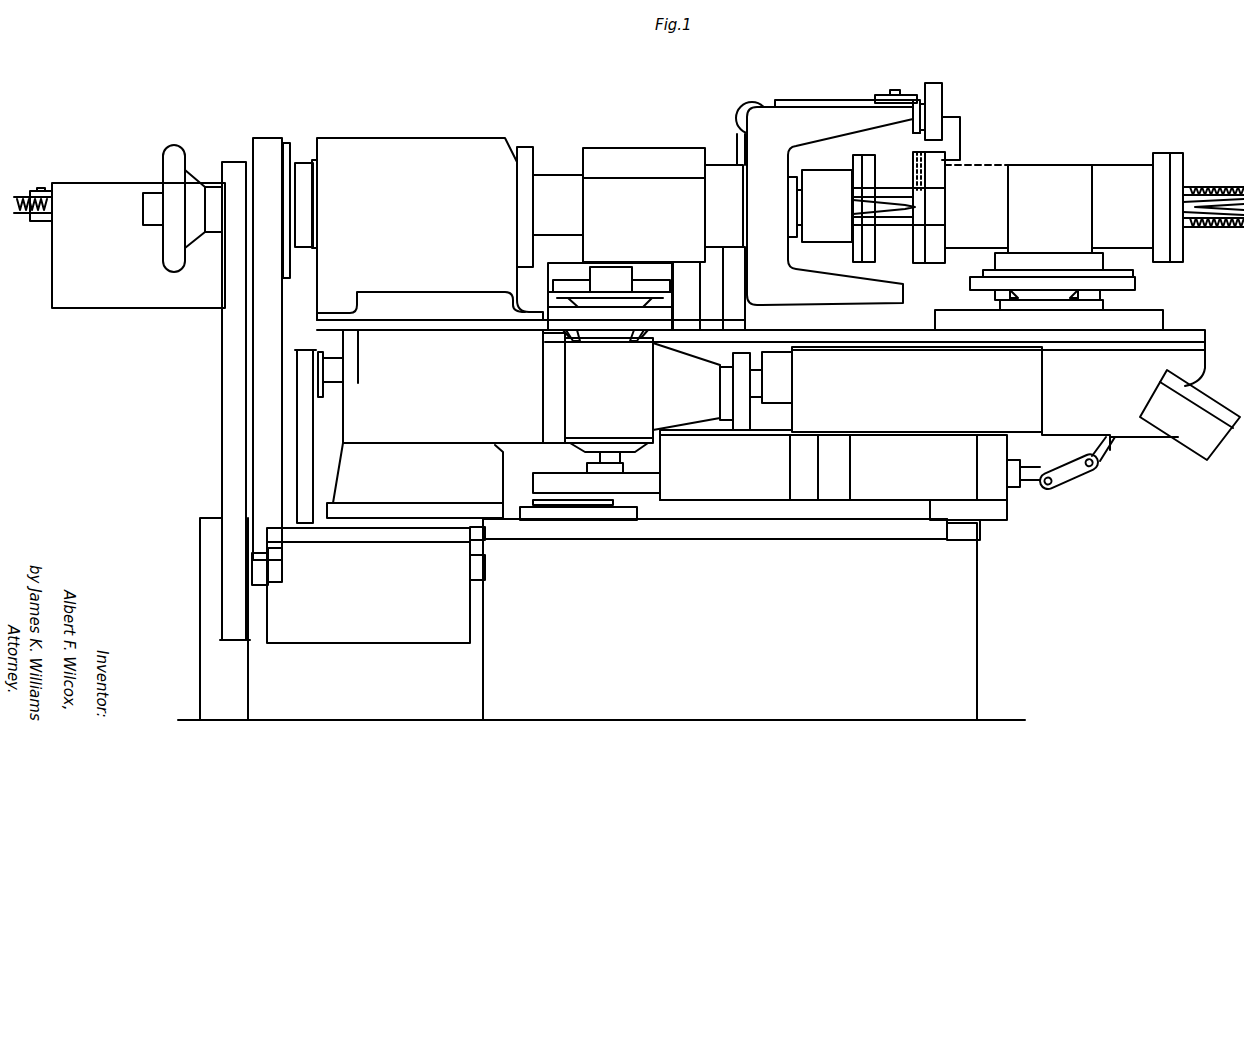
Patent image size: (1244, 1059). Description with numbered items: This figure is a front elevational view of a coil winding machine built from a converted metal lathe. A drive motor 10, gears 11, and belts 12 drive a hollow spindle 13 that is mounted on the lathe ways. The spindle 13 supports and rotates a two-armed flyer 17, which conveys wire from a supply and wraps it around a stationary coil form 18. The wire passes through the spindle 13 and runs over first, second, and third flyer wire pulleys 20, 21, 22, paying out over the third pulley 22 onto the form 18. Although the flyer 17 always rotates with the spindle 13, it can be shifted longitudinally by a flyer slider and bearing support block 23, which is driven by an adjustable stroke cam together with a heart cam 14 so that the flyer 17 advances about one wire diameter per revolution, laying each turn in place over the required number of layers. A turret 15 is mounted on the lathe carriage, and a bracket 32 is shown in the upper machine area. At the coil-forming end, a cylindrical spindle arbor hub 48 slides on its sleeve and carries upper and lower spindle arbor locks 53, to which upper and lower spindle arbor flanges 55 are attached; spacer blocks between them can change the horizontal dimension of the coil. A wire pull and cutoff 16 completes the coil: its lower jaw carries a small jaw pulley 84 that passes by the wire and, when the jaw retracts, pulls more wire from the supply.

The drive motor 10 is at (368, 585).
The gears 11 is at (432, 220).
The belts 12 is at (22, 195).
The hollow spindle 13 is at (152, 203).
The heart cam 14 is at (574, 283).
The turret 15 is at (1045, 165).
The wire pull and cutoff 16 is at (945, 98).
The flyer 17 is at (817, 107).
The stationary coil form 18 is at (895, 230).
The first flyer wire pulley 20 is at (737, 106).
The second flyer wire pulley 21 is at (881, 95).
The third flyer wire pulley 22 is at (916, 100).
The flyer slider and bearing support block 23 is at (641, 147).
The bearing bracket 32 is at (718, 165).
The spindle arbor hub 48 is at (833, 216).
The spindle arbor locks 53 is at (853, 160).
The spindle arbor flanges 55 is at (869, 155).
The jaw pulley 84 is at (913, 141).